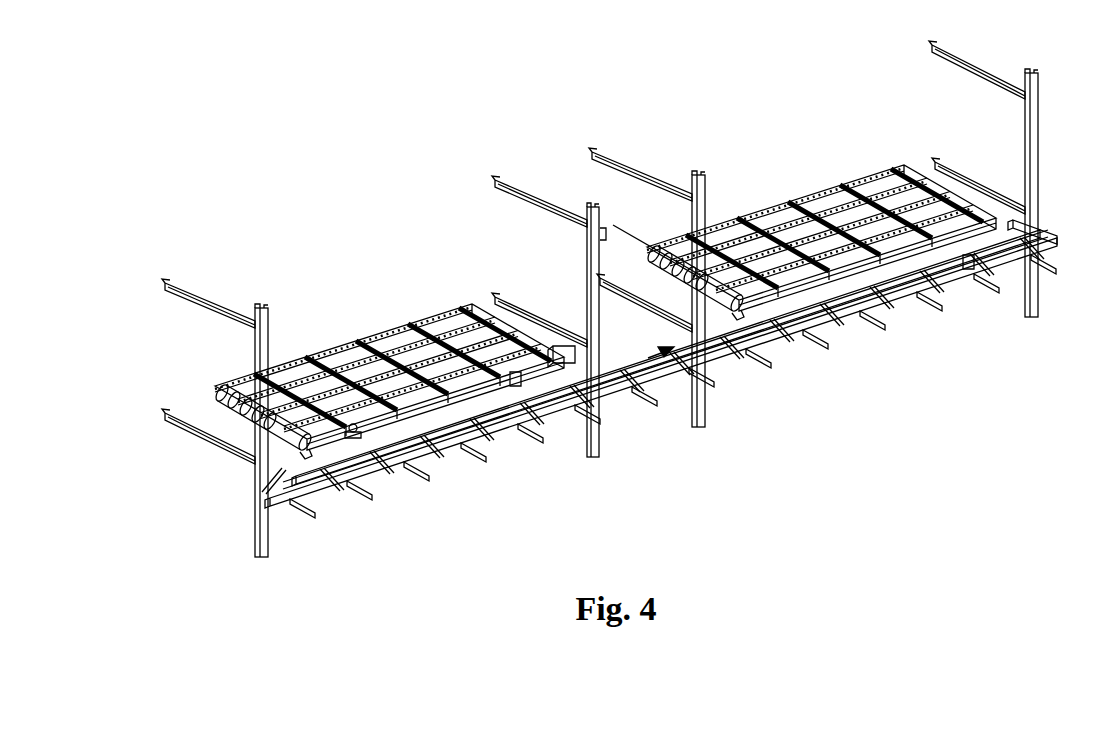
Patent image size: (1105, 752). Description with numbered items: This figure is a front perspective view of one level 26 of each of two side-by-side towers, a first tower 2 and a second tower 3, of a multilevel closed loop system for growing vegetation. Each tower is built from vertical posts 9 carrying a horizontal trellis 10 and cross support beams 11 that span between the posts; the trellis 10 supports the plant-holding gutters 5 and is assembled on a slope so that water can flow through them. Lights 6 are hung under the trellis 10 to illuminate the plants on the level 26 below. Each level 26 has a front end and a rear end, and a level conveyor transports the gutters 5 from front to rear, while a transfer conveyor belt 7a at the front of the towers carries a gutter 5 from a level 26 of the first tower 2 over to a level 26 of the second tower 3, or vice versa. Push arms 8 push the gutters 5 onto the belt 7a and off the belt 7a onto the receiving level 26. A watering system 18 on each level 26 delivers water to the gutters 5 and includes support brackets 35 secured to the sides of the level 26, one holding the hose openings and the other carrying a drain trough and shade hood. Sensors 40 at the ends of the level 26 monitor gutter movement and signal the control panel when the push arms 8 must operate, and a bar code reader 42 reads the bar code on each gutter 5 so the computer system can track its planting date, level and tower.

The first tower 2 is at (738, 160).
The second tower 3 is at (315, 222).
The gutter 5 is at (362, 340).
The light 6 is at (414, 413).
The transfer conveyor belt 7a is at (652, 378).
The push arm 8 is at (513, 382).
The post 9 is at (265, 318).
The trellis 10 is at (289, 498).
The cross support beam 11 is at (181, 288).
The watering system 18 is at (206, 413).
The level 26 is at (222, 360).
The support bracket 35 is at (562, 352).
The sensor 40 is at (356, 433).
The bar code reader 42 is at (995, 228).